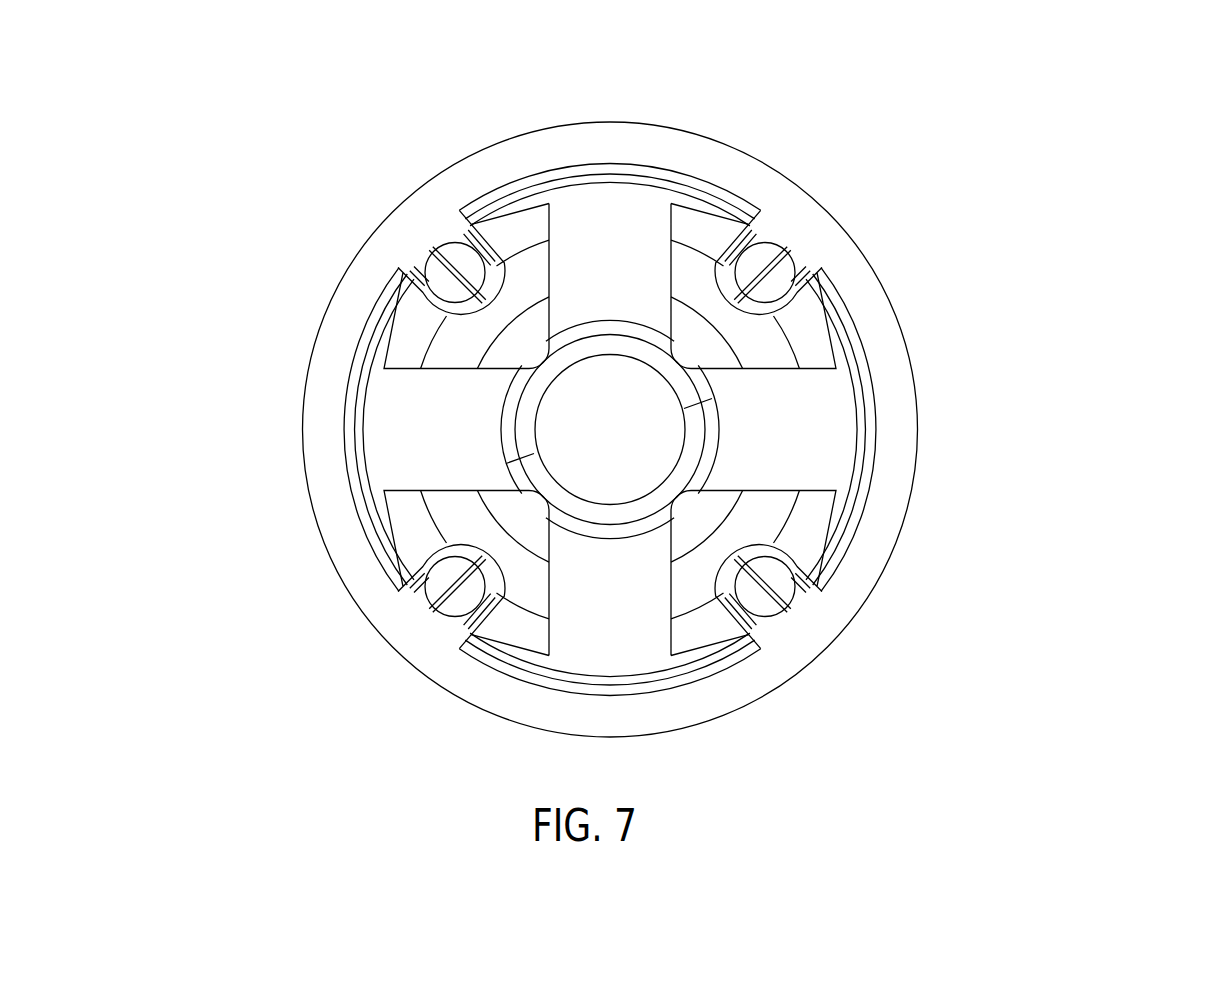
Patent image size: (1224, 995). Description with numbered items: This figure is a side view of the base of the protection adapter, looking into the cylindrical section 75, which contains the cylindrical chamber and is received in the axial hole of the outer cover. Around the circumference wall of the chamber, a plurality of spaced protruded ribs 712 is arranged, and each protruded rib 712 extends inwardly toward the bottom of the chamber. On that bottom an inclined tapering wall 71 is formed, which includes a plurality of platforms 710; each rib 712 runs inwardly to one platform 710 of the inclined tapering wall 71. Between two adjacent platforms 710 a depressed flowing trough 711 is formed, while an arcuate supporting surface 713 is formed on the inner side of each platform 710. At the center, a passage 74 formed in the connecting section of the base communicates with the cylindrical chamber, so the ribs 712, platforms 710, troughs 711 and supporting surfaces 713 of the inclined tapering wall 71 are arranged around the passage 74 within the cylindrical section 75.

The inclined tapering wall 71 is at (551, 256).
The platform 710 is at (462, 350).
The depressed flowing trough 711 is at (620, 233).
The protruded rib 712 is at (443, 278).
The arcuate supporting surface 713 is at (527, 342).
The passage 74 is at (640, 423).
The cylindrical section 75 is at (873, 272).